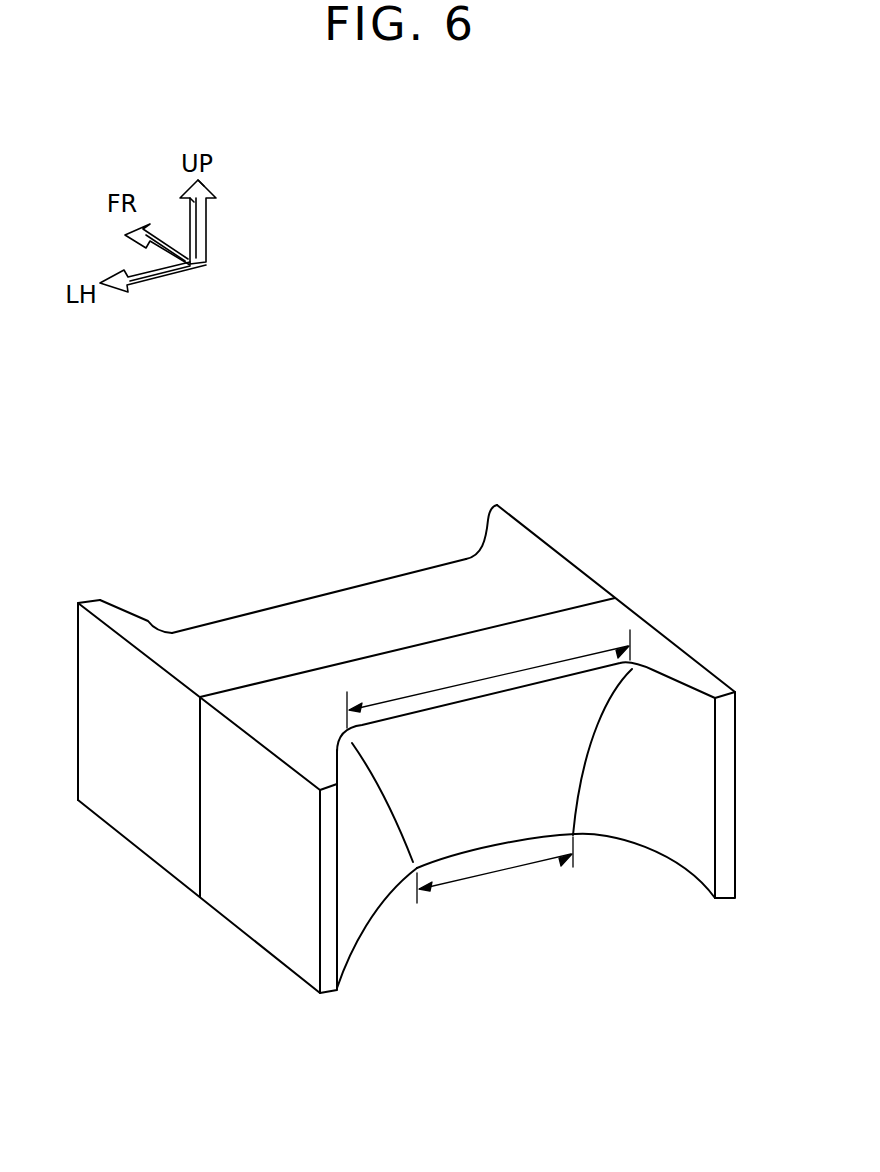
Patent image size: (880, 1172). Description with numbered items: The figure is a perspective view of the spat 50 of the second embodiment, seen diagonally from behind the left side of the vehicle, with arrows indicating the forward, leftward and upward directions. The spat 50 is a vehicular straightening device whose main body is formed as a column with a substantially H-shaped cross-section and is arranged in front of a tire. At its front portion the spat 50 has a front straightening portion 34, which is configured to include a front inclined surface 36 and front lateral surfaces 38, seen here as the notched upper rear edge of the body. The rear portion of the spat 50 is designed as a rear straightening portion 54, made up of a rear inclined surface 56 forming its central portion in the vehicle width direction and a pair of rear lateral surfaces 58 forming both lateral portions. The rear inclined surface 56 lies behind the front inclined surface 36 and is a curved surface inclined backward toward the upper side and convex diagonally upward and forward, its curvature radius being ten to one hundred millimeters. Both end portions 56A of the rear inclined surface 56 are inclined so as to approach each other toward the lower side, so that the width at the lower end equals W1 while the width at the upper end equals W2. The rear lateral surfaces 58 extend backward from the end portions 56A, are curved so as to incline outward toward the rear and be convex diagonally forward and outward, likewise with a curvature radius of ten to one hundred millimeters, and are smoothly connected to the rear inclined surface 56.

The spat 50 is at (580, 500).
The front straightening portion 34 is at (298, 535).
The front inclined surface 36 is at (343, 592).
The front lateral surfaces 38 is at (150, 625).
The rear straightening portion 54 is at (526, 913).
The rear inclined surface 56 is at (510, 817).
The end portions of the rear inclined surface 56A is at (605, 710).
The rear lateral surfaces 58 is at (398, 898).
The width dimension at the lower end of the rear inclined surface W1 is at (488, 877).
The width dimension at the upper end of the rear inclined surface W2 is at (507, 675).